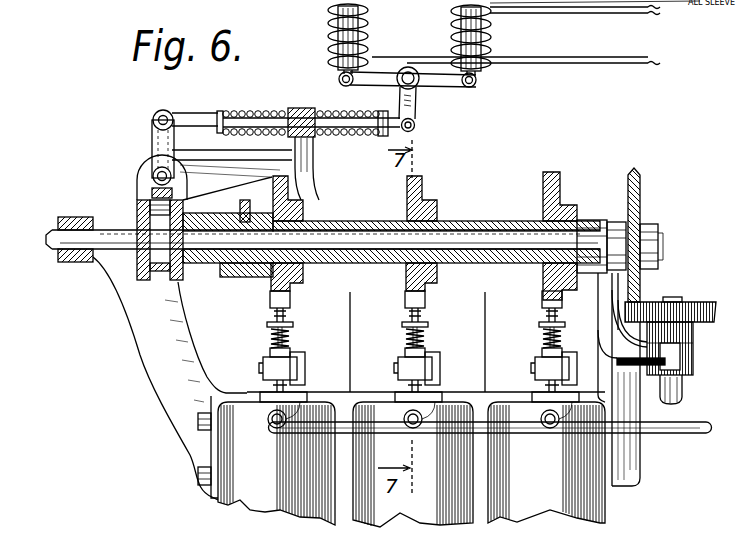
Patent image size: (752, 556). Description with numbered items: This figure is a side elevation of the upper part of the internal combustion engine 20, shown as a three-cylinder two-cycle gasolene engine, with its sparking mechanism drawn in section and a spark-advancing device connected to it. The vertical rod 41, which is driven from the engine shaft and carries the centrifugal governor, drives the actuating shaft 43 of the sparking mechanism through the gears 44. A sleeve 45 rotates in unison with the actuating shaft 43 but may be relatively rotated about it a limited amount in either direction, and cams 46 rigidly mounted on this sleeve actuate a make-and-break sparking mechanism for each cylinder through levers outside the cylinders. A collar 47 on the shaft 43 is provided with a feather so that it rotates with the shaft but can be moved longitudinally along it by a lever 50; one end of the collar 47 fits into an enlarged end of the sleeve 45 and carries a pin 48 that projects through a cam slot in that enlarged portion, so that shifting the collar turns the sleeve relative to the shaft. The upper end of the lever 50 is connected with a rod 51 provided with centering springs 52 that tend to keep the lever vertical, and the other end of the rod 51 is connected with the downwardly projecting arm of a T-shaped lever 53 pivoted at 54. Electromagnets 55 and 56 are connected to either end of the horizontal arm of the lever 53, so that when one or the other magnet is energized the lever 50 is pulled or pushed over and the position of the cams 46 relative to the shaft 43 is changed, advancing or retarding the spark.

The internal combustion engine 20 is at (592, 495).
The vertical rod 41 is at (684, 394).
The actuating shaft 43 is at (470, 240).
The gears 44 is at (645, 301).
The sleeve 45 is at (342, 223).
The cams 46 is at (305, 201).
The collar 47 is at (204, 270).
The pin 48 is at (247, 205).
The lever 50 is at (150, 130).
The rod 51 is at (182, 118).
The centering springs 52 is at (248, 112).
The T-shaped lever 53 is at (416, 121).
The pivot 54 is at (420, 85).
The electromagnet 55 is at (330, 33).
The electromagnet 56 is at (494, 33).